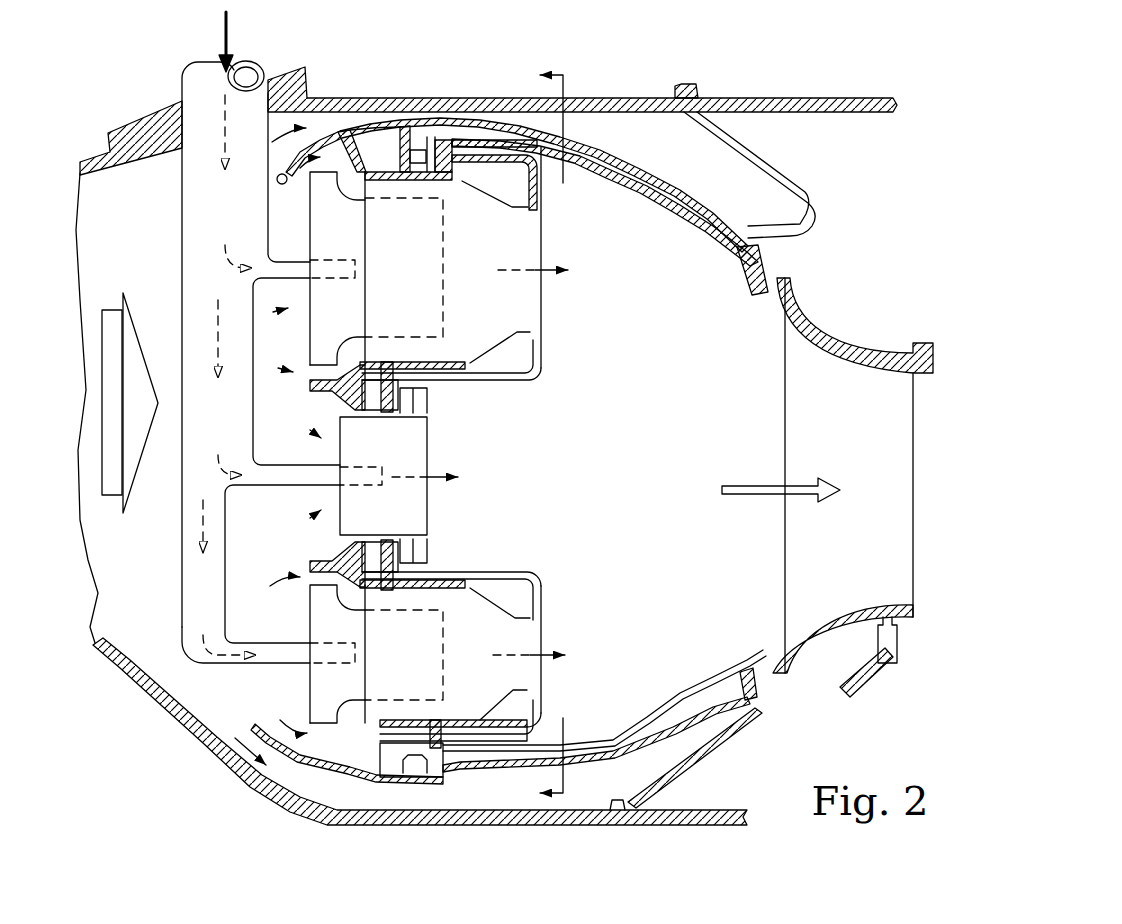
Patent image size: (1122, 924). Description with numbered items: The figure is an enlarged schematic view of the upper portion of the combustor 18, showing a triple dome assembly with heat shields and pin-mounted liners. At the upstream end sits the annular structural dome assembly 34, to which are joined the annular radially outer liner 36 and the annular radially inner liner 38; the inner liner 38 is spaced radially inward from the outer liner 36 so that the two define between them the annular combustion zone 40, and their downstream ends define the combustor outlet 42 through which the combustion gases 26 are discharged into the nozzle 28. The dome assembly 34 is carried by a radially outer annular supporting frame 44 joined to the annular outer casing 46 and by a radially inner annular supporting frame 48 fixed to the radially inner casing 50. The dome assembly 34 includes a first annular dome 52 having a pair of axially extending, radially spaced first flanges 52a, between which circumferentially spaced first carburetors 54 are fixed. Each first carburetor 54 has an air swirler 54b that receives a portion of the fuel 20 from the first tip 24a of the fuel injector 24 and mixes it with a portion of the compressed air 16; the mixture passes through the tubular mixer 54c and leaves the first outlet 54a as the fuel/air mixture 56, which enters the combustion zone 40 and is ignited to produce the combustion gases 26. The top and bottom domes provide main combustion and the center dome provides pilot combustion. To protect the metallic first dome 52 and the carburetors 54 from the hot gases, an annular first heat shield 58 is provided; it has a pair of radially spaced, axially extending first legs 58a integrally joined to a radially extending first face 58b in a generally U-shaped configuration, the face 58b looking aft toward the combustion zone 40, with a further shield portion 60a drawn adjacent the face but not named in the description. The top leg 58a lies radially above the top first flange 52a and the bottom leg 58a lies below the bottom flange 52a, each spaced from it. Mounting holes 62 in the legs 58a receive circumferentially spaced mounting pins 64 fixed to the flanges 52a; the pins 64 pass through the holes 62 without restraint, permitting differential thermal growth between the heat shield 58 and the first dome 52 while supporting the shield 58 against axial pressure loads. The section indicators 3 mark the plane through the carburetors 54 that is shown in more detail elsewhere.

The section line 3- 3 is at (533, 436).
The compressed air 16 is at (108, 300).
The combustor 18 is at (862, 234).
The fuel 20 is at (231, 37).
The fuel injector 24 is at (182, 213).
The first tip 24a is at (292, 260).
The combustion gases 26 is at (753, 496).
The nozzle 28 is at (823, 333).
The dome assembly 34 is at (378, 156).
The radially outer liner 36 is at (730, 241).
The radially inner liner 38 is at (708, 677).
The combustion zone 40 is at (639, 445).
The combustor outlet 42 is at (752, 418).
The radially outer supporting frame 44 is at (664, 169).
The outer casing 46 is at (627, 98).
The radially inner supporting frame 48 is at (727, 738).
The radially inner casing 50 is at (713, 810).
The first dome 52 is at (405, 182).
The first flanges 52a is at (456, 180).
The first carburetors 54 is at (390, 286).
The first outlets 54a is at (542, 300).
The air swirler 54b is at (310, 354).
The mixer 54c is at (529, 224).
The fuel/air mixture 56 is at (553, 275).
The first heat shield 58 is at (541, 382).
The first legs 58a is at (483, 186).
The first face 58b is at (542, 350).
The liner leg 60a is at (541, 200).
The mounting holes 62 is at (444, 171).
The mounting pins 64 is at (431, 166).